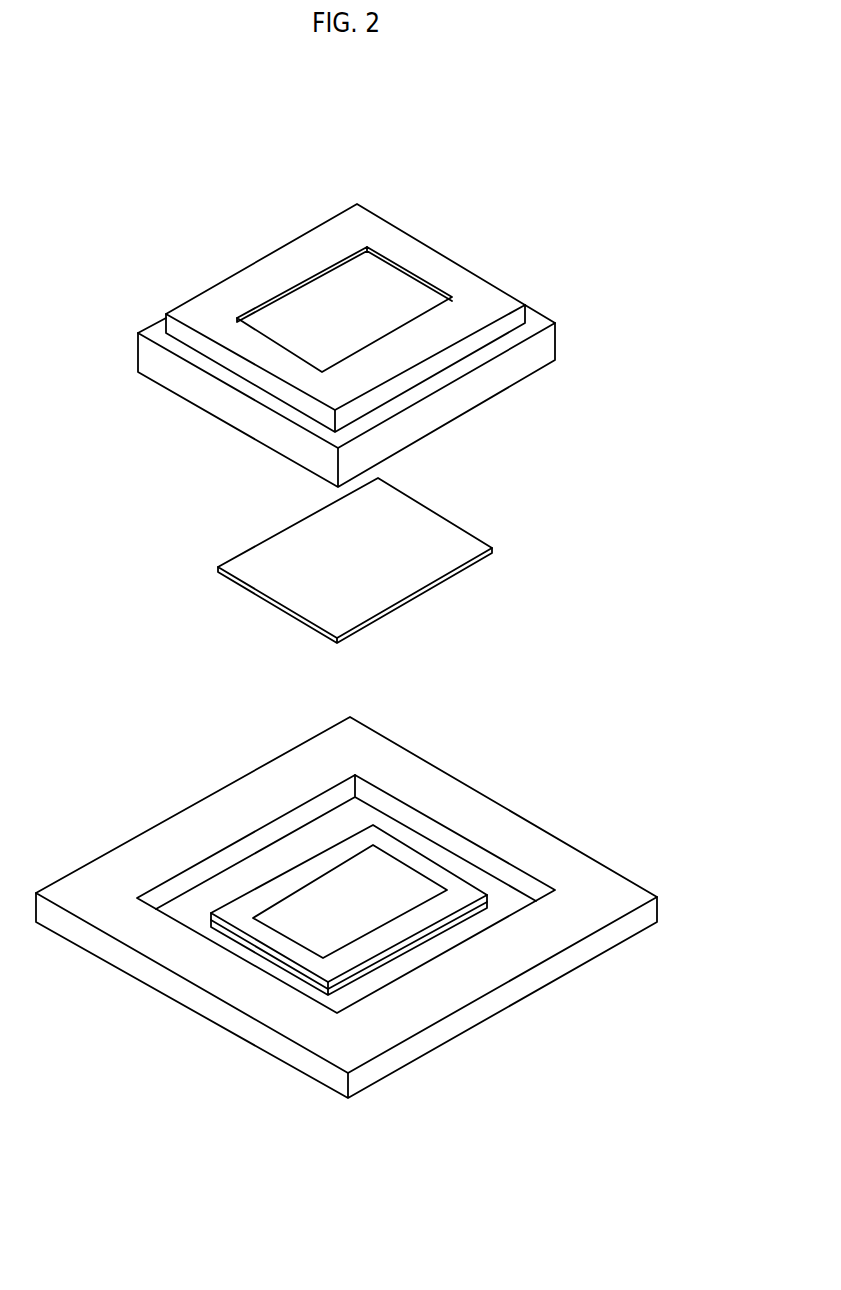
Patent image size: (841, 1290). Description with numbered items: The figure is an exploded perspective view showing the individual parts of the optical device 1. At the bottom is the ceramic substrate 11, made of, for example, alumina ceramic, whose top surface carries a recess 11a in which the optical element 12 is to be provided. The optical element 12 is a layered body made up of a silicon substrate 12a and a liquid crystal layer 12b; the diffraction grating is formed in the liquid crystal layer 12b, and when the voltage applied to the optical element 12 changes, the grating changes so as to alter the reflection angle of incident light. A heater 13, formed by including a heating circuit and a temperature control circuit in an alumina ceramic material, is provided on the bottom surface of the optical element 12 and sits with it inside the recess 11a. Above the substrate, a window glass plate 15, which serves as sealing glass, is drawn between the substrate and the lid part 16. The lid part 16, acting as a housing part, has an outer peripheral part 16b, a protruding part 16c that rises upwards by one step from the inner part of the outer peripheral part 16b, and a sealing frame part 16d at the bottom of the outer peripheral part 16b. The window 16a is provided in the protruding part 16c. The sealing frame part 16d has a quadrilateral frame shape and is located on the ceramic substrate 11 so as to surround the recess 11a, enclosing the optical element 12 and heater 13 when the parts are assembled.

The optical device 1 is at (648, 166).
The ceramic substrate 11 is at (613, 881).
The recess 11a is at (490, 913).
The optical element 12 is at (128, 1008).
The silicon substrate 12a is at (233, 932).
The liquid crystal layer 12b is at (300, 933).
The heater 13 is at (303, 977).
The window glass plate 15 is at (432, 518).
The lid part 16 is at (616, 203).
The window 16a is at (388, 262).
The outer peripheral part 16b is at (534, 318).
The protruding part 16c is at (503, 296).
The sealing frame part 16d is at (552, 332).